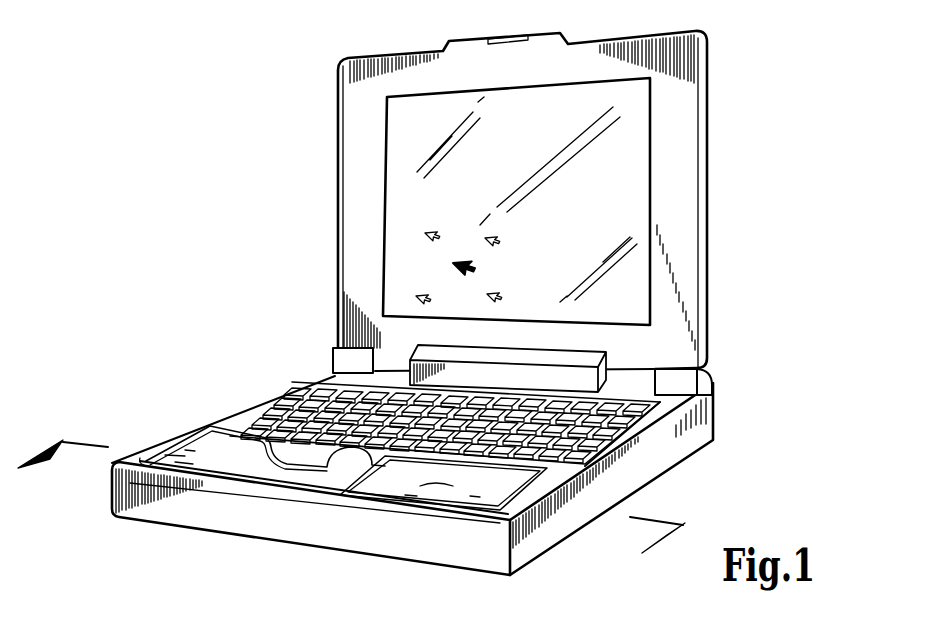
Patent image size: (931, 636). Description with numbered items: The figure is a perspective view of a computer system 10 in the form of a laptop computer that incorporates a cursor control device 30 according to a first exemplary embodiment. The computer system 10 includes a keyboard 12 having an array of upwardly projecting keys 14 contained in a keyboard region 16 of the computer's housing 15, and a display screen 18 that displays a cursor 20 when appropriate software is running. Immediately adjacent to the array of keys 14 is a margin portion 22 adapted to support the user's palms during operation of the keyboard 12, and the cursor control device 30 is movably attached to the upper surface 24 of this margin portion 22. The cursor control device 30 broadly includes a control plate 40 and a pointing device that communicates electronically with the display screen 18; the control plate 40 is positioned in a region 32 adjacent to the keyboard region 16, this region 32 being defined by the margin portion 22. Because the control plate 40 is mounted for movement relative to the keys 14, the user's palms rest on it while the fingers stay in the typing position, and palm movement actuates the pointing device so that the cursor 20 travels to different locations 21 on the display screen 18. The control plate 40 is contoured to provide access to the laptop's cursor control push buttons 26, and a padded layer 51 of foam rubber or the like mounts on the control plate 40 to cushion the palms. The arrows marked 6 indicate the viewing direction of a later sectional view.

The computer system 10 is at (757, 97).
The keyboard 12 is at (275, 405).
The keys 14 is at (590, 405).
The housing 15 is at (700, 420).
The keyboard region 16 is at (323, 383).
The display screen 18 is at (623, 160).
The cursor 20 is at (475, 273).
The locations 21 is at (430, 232).
The margin portion 22 is at (497, 517).
The upper surface 24 is at (570, 467).
The buttons 26 is at (372, 462).
The cursor control device 30 is at (208, 452).
The region 32 is at (223, 532).
The control plate 40 is at (140, 457).
The padded layer 51 is at (445, 482).
The section line for FIG. 6 is at (351, 516).